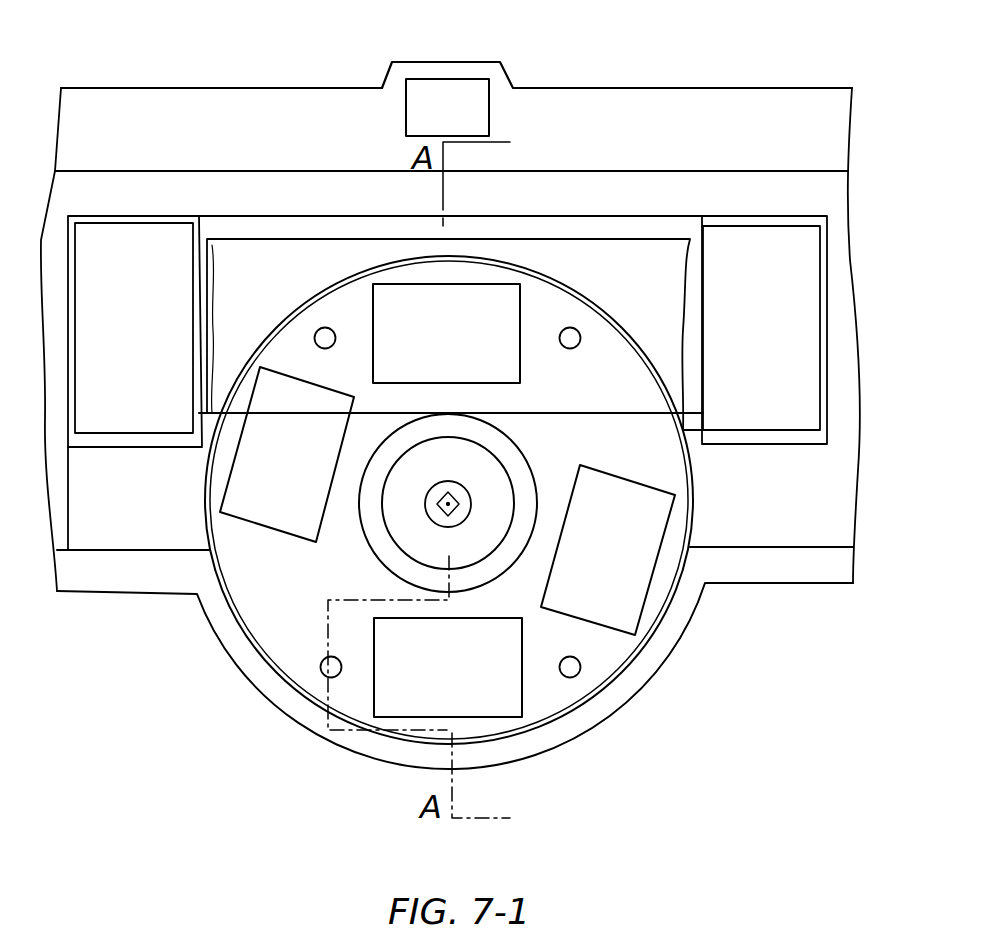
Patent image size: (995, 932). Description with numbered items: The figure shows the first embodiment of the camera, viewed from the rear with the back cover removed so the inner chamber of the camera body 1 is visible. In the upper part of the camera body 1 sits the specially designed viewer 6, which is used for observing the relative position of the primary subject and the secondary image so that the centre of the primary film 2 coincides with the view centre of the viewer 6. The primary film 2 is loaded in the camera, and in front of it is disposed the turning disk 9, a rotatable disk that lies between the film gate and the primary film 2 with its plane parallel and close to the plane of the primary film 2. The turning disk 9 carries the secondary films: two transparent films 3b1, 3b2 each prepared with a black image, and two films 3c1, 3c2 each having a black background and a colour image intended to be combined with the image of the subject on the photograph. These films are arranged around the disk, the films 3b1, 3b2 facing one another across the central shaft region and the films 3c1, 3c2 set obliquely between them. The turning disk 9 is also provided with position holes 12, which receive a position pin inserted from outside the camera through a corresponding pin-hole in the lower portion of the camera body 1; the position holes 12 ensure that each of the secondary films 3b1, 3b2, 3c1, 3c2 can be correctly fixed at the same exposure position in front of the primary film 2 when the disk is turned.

The camera body 1 is at (262, 105).
The viewer 6 is at (447, 93).
The primary film 2 is at (660, 293).
The turning disk 9 is at (270, 630).
The secondary film 3b 3b1 is at (446, 333).
The secondary film 3b 3b2 is at (448, 667).
The secondary film 3c 3c1 is at (287, 454).
The secondary film 3c 3c2 is at (608, 550).
The position holes 12 is at (562, 673).